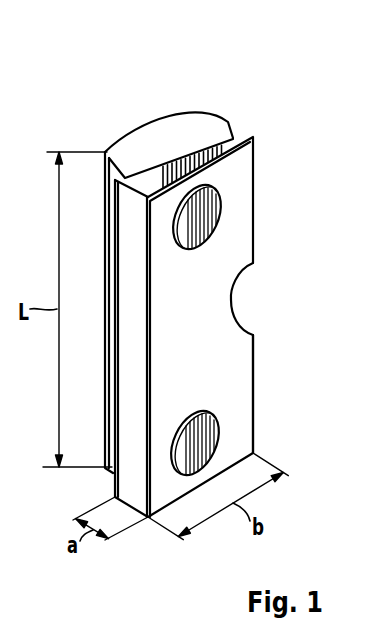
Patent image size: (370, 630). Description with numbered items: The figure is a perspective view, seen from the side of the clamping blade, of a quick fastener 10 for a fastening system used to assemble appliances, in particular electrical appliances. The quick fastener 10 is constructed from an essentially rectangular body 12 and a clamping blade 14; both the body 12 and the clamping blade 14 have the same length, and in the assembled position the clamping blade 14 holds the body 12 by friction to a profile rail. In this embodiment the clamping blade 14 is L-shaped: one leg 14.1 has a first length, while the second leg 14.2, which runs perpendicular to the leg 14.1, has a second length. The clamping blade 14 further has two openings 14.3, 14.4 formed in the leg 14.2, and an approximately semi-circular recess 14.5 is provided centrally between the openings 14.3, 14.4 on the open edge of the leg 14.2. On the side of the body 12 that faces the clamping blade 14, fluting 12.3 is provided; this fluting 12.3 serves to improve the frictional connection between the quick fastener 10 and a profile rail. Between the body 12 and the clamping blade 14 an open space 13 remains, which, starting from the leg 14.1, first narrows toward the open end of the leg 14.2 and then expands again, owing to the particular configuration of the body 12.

The quick fastener 10 is at (294, 81).
The body 12 is at (168, 146).
The fluting 12.3 is at (197, 150).
The open space 13 is at (150, 184).
The clamping blade 14 is at (192, 353).
The first leg 14.1 is at (131, 490).
The second leg 14.2 is at (234, 393).
The opening 14.3 is at (223, 214).
The opening 14.4 is at (216, 443).
The semi-circular recess 14.5 is at (245, 302).